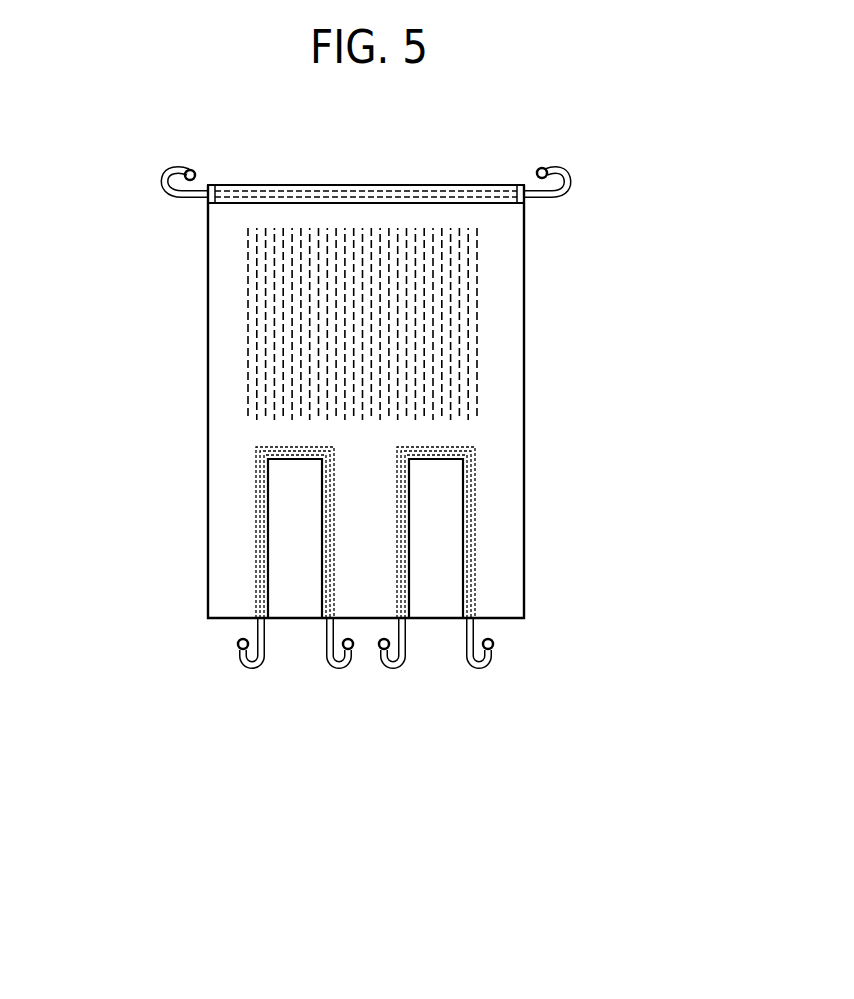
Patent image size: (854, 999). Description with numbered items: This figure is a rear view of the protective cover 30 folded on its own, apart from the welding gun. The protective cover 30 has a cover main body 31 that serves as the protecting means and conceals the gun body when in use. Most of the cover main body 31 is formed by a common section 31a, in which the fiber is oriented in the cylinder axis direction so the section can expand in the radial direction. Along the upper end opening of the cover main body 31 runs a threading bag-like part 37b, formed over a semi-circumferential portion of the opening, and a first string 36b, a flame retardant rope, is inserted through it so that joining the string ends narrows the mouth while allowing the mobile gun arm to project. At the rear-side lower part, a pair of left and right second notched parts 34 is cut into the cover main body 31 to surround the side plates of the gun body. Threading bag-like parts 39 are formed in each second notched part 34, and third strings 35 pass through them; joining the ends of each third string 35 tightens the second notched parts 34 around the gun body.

The protective cover 30 is at (288, 401).
The cover main body 31 is at (200, 411).
The common section 31a is at (507, 356).
The second notched parts 34 is at (409, 572).
The third strings 35 is at (248, 662).
The first string 36b is at (550, 172).
The threading bag-like part 37b is at (379, 184).
The threading bag-like parts 39 is at (263, 565).